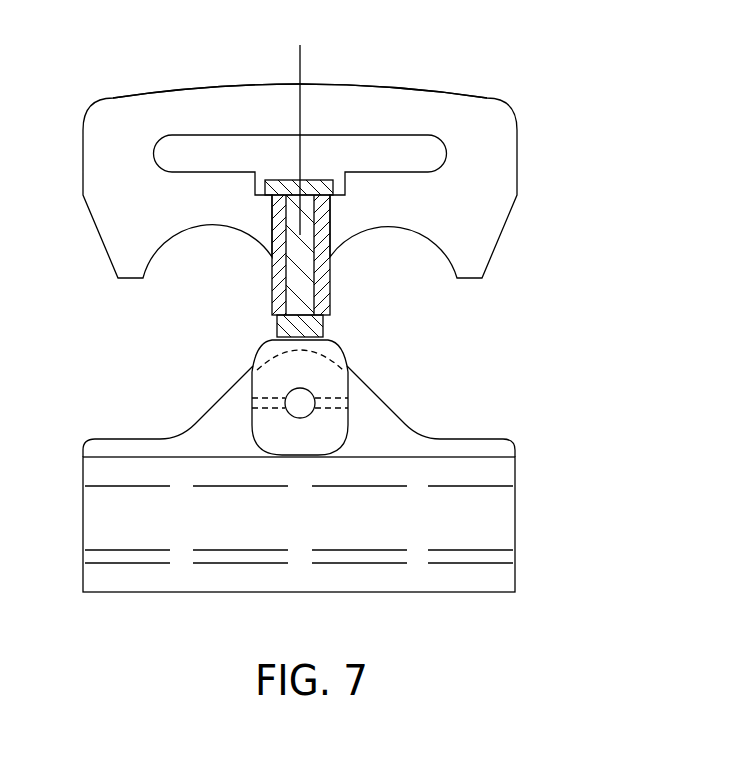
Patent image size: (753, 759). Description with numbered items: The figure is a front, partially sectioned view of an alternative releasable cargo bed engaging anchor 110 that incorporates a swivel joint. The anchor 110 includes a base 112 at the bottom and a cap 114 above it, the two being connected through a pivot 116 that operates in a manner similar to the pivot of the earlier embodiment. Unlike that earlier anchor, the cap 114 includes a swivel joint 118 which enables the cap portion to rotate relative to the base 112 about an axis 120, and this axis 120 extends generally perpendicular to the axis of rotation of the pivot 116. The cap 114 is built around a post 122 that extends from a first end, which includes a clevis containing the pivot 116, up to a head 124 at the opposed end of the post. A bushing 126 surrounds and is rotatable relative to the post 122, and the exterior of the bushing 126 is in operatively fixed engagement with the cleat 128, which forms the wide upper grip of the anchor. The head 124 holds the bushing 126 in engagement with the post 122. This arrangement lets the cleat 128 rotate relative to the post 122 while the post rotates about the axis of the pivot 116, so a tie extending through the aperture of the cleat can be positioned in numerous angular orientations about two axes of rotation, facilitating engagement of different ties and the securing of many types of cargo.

The anchor 110 is at (585, 250).
The base 112 is at (548, 440).
The cap 114 is at (518, 74).
The pivot 116 is at (307, 387).
The swivel joint 118 is at (355, 371).
The axis 120 is at (300, 62).
The post 122 is at (277, 318).
The head 124 is at (318, 178).
The bushing 126 is at (272, 265).
The cleat 128 is at (143, 95).